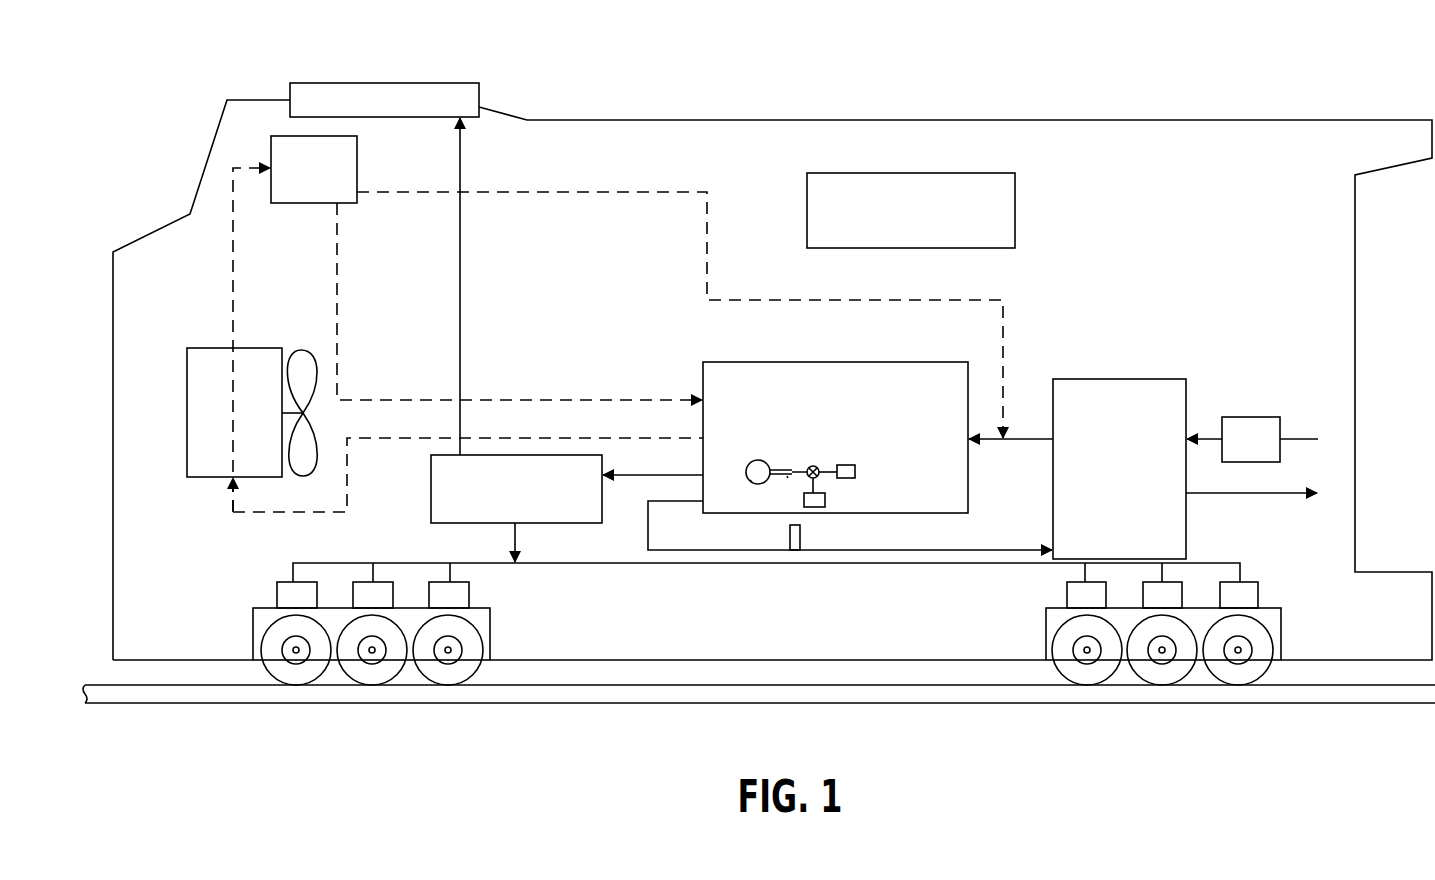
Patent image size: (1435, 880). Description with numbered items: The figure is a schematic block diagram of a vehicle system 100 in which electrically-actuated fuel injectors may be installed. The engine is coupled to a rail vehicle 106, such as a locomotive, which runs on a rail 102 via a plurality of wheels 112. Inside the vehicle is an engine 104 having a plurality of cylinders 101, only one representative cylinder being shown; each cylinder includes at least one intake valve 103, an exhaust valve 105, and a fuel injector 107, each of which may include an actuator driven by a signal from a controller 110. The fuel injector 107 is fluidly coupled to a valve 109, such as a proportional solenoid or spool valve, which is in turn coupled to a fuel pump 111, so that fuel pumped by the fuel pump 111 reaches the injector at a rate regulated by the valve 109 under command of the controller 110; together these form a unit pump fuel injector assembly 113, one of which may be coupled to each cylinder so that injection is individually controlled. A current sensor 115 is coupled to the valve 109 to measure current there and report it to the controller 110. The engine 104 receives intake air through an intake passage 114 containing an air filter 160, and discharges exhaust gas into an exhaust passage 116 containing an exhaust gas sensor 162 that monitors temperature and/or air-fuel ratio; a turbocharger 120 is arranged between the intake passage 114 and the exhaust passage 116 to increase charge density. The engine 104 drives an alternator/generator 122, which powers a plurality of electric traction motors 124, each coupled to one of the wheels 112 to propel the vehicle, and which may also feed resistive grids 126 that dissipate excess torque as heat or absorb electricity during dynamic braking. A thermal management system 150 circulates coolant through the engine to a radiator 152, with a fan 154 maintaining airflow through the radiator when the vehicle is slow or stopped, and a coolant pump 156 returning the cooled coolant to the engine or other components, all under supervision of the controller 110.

The vehicle system 100 is at (772, 335).
The rail 102 is at (1355, 703).
The engine 104 is at (835, 437).
The rail vehicle 106 is at (1085, 120).
The controller 110 is at (1015, 188).
The wheels 112 is at (478, 642).
The intake passage 114 is at (985, 445).
The exhaust passage 116 is at (665, 503).
The turbocharger 120 is at (1119, 469).
The alternator/generator 122 is at (431, 488).
The electric traction motors 124 is at (470, 599).
The resistive grids 126 is at (458, 83).
The thermal management system 150 is at (206, 306).
The radiator 152 is at (234, 412).
The fan 154 is at (309, 350).
The coolant pump 156 is at (314, 169).
The air filter 160 is at (1251, 439).
The exhaust gas sensor 162 is at (802, 548).
The cylinder 101 is at (780, 469).
The intake valve 103 is at (762, 461).
The exhaust valve 105 is at (752, 482).
The fuel injector 107 is at (788, 478).
The valve 109 is at (815, 466).
The fuel pump 111 is at (856, 470).
The unit pump fuel injector assembly 113 is at (802, 451).
The current sensor 115 is at (826, 500).